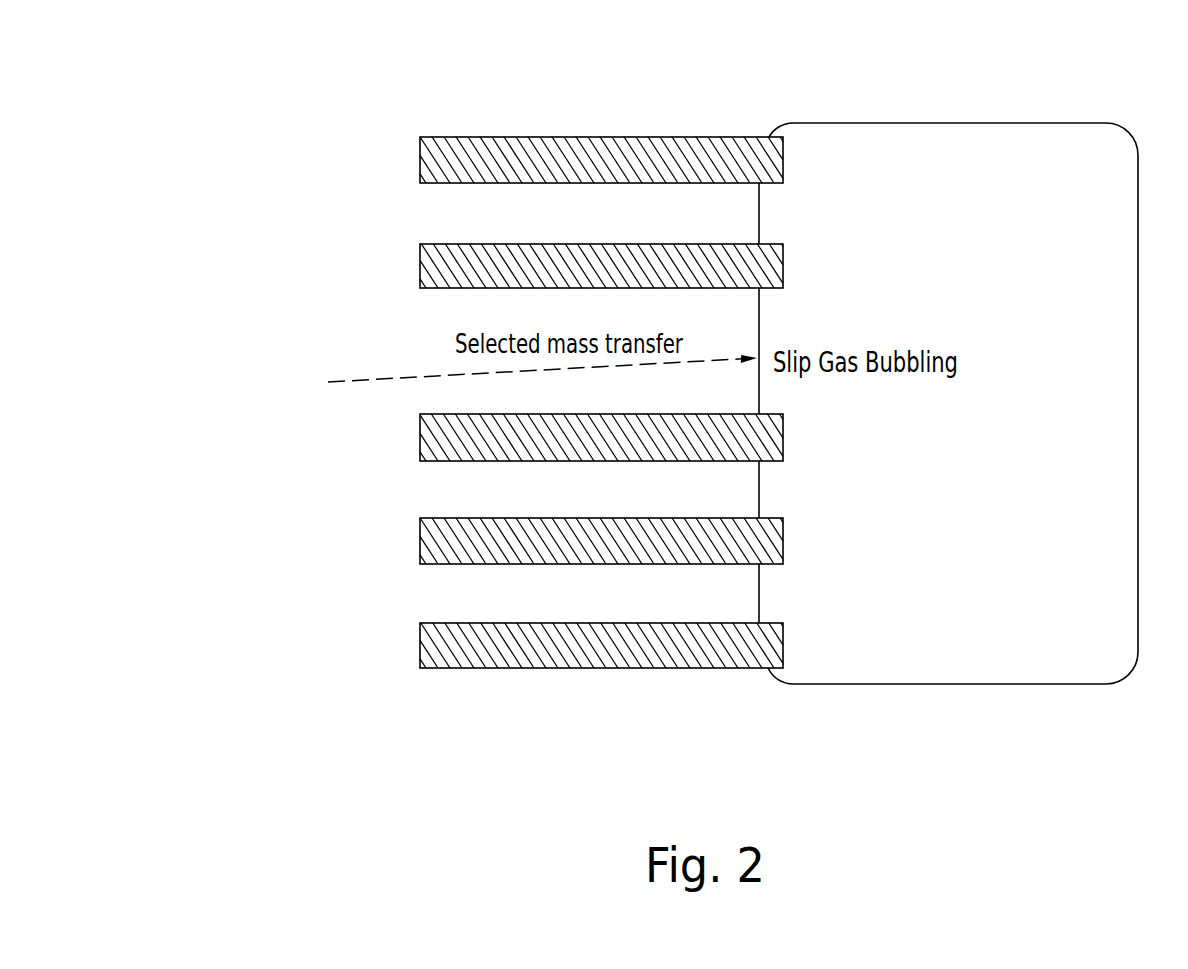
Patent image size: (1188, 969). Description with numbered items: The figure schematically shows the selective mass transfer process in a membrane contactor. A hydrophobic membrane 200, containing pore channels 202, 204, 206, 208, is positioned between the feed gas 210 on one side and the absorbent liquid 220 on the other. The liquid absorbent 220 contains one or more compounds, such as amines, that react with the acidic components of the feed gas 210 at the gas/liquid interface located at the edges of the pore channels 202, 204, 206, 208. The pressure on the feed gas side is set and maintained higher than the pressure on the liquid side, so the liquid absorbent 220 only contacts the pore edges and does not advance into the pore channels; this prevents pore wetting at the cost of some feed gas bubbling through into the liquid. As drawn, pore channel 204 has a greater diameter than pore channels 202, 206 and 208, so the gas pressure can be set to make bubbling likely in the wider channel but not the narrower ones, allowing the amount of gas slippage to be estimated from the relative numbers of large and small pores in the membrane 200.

The membrane 200 is at (573, 97).
The pore channel 202 is at (410, 212).
The pore channel 204 is at (410, 322).
The pore channel 206 is at (410, 490).
The pore channel 208 is at (410, 600).
The feed gas 210 is at (264, 496).
The absorbent liquid 220 is at (964, 568).